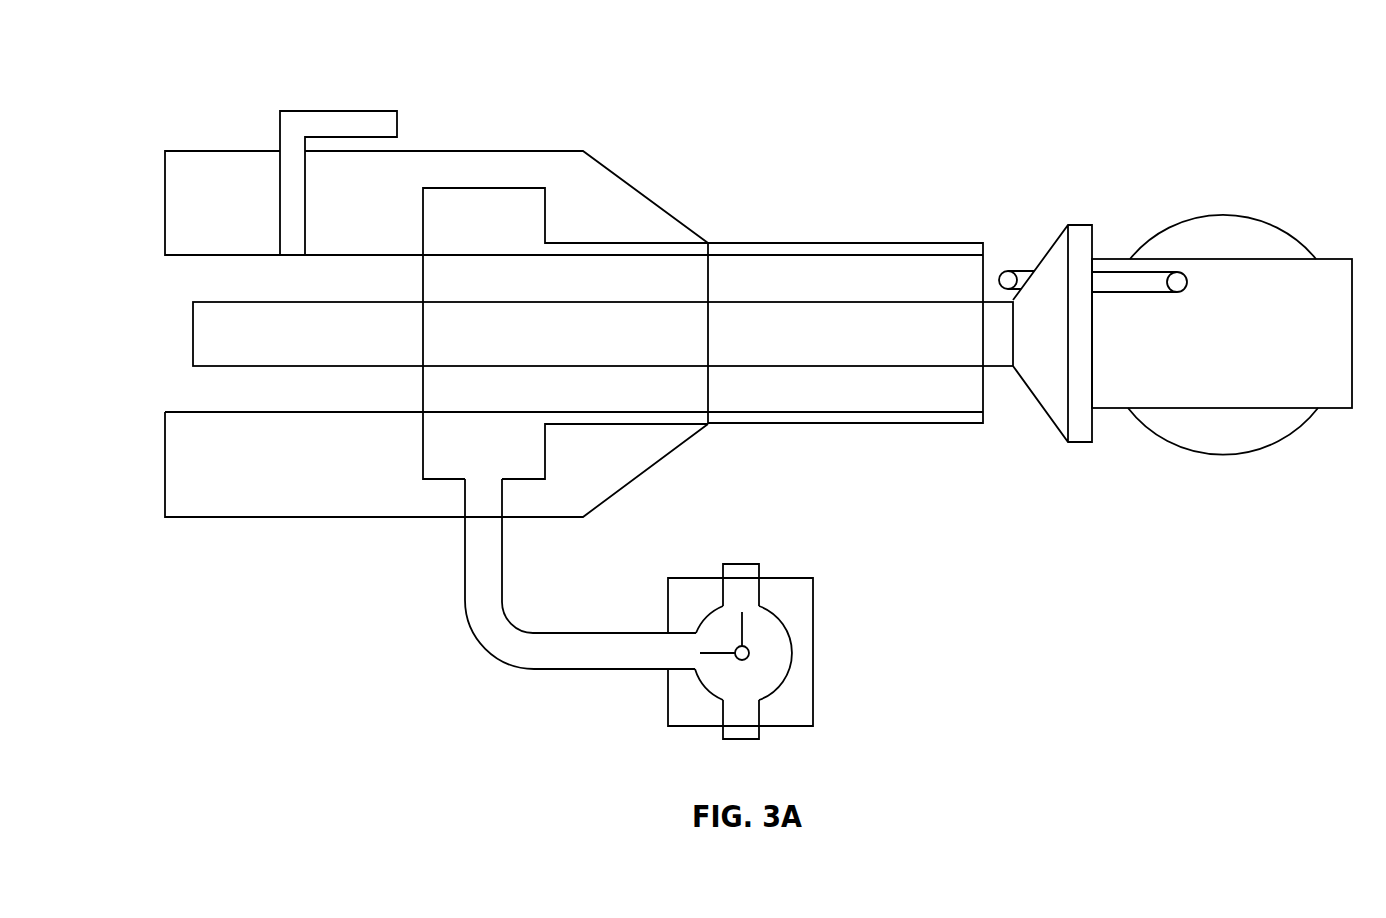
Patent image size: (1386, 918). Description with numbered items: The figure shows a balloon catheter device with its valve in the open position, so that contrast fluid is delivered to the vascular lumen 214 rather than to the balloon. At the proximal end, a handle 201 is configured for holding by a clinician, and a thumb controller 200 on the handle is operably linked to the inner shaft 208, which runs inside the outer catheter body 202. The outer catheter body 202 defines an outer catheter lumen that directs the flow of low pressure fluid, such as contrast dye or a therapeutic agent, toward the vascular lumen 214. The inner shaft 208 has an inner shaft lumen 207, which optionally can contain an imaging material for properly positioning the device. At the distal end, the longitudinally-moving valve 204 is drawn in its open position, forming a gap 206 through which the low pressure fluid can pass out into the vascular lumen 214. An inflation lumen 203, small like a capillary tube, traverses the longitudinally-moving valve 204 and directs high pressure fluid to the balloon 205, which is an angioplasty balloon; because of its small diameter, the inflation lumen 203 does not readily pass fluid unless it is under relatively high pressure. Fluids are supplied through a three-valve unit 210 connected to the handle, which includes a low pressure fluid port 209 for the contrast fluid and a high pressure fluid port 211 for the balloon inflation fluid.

The thumb controller 200 is at (347, 110).
The handle 201 is at (483, 150).
The outer catheter body 202 is at (835, 236).
The inflation lumen 203 is at (1032, 270).
The longitudinally-moving valve 204 is at (1080, 224).
The balloon 205 is at (1216, 214).
The gap 206 is at (998, 401).
The inner shaft lumen 207 is at (260, 345).
The inner shaft 208 is at (853, 377).
The low pressure fluid port 209 is at (742, 563).
The 3-valve unit 210 is at (815, 655).
The high pressure fluid port 211 is at (742, 741).
The vascular lumen 214 is at (1265, 189).